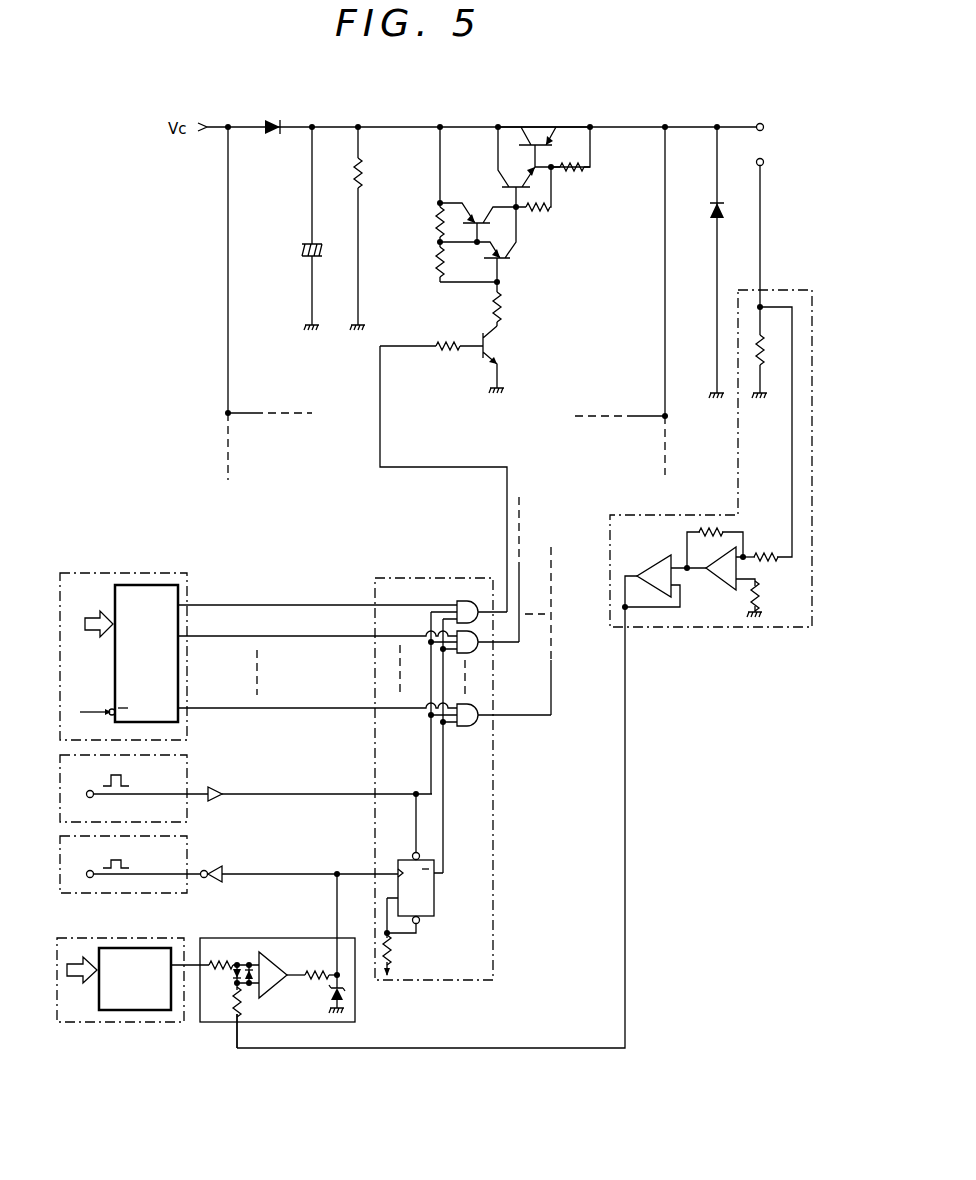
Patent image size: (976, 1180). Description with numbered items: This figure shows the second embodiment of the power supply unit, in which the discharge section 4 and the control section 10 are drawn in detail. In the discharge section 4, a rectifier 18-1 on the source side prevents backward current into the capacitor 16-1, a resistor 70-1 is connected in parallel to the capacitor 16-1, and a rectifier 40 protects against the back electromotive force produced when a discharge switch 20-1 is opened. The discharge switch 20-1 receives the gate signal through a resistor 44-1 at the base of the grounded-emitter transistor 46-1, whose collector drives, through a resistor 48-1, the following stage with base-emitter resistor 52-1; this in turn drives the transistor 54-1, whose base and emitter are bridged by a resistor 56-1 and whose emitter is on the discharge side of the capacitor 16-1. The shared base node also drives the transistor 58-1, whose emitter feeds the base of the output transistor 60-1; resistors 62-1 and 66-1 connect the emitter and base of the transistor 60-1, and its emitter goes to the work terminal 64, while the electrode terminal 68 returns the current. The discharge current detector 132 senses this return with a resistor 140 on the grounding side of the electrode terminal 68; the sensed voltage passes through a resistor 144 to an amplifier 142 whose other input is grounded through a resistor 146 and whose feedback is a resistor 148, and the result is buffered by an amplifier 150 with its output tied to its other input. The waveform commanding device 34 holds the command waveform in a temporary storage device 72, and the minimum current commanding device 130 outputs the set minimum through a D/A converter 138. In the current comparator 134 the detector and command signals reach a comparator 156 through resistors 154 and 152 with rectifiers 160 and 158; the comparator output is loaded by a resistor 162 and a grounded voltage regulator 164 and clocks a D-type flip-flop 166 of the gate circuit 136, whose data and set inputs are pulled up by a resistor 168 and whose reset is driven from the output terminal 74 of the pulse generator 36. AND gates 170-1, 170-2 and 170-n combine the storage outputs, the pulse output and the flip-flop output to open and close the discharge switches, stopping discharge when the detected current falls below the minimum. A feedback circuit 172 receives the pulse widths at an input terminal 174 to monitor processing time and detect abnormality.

The discharge section 4 is at (694, 106).
The control section 10 is at (182, 500).
The rectifier 18-1 is at (272, 118).
The capacitor 16-1 is at (303, 243).
The resistor 70-1 is at (362, 185).
The resistor 56-1 is at (437, 212).
The resistor 52-1 is at (436, 262).
The transistor 54-1 is at (478, 217).
The transistor 58-1 is at (503, 184).
The transistor 60-1 is at (536, 125).
The resistor 66-1 is at (576, 172).
The resistor 62-1 is at (541, 212).
The discharge switch 20-1 is at (589, 124).
The resistor 48-1 is at (500, 307).
The transistor 46-1 is at (478, 352).
The resistor 44-1 is at (443, 341).
The rectifier 40 is at (712, 218).
The work terminal 64 is at (763, 124).
The electrode terminal 68 is at (763, 165).
The discharge current detector 132 is at (616, 514).
The resistor 140 is at (763, 368).
The resistor 144 is at (768, 552).
The resistor 148 is at (707, 527).
The amplifier 142 is at (722, 590).
The resistor 146 is at (760, 598).
The amplifier 150 is at (658, 565).
The waveform commanding device 34 is at (82, 572).
The temporary storage device 72 is at (113, 660).
The gate circuit 136 is at (496, 800).
The AND gate 170-1 is at (468, 600).
The AND gate 170-2 is at (482, 648).
The AND gate 170-n is at (478, 726).
The pulse generator 36 is at (190, 770).
The output terminal 74 is at (87, 792).
The feedback circuit 172 is at (190, 850).
The input terminal 174 is at (87, 872).
The D-type flip-flop 166 is at (436, 903).
The resistor 168 is at (395, 950).
The minimum current commanding device 130 is at (96, 1024).
The D/A converter 138 is at (150, 1012).
The current comparator 134 is at (345, 1026).
The resistor 154 is at (215, 958).
The rectifier 160 is at (248, 958).
The rectifier 158 is at (236, 985).
The resistor 152 is at (240, 1012).
The comparator 156 is at (278, 988).
The resistor 162 is at (306, 966).
The voltage regulator 164 is at (346, 1000).